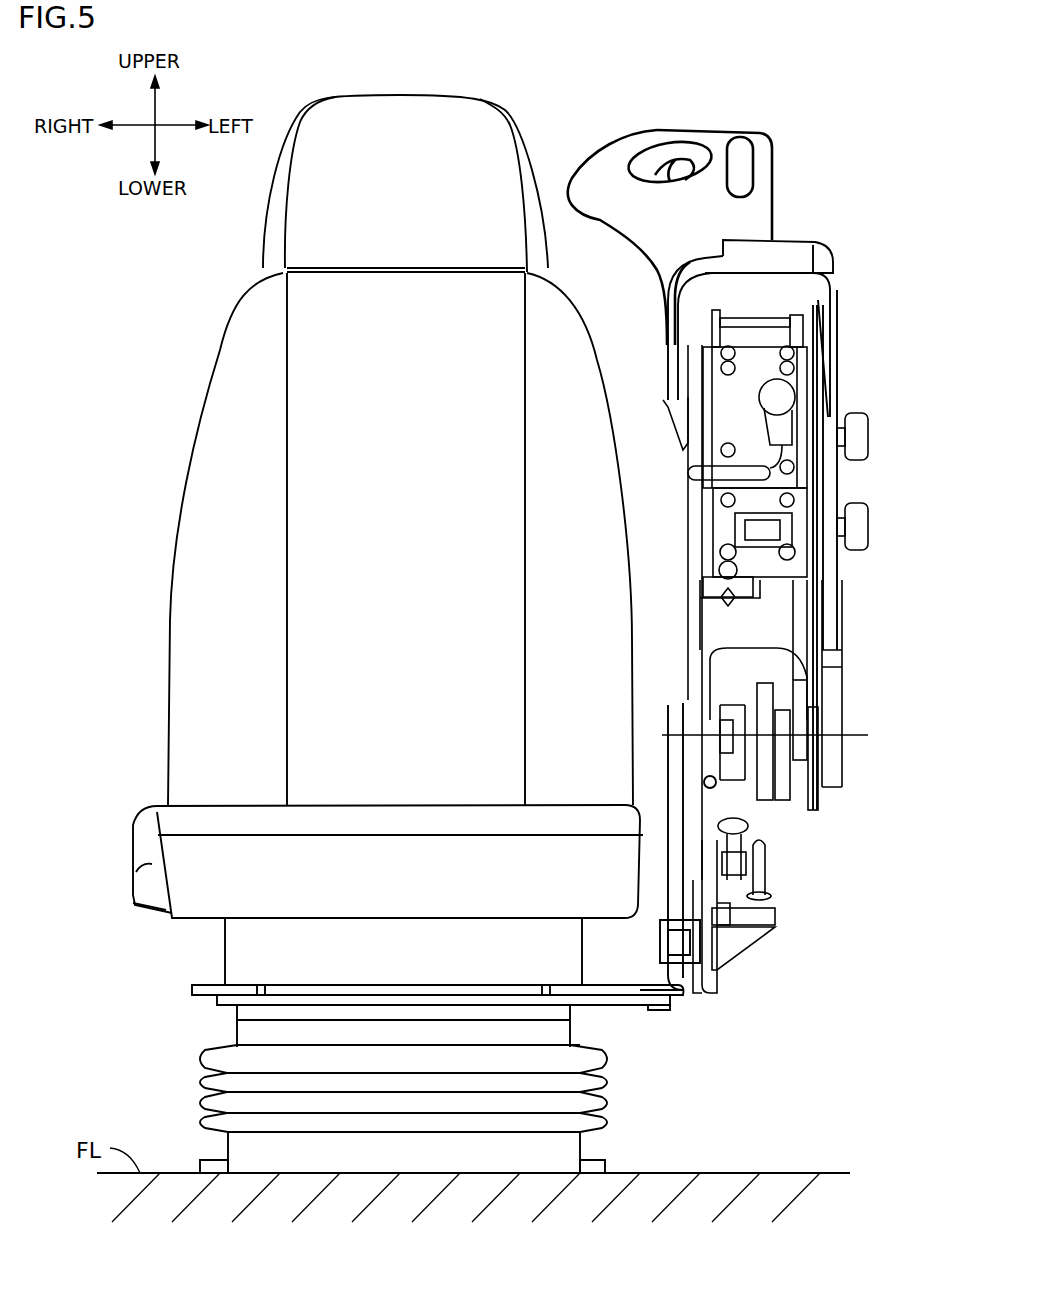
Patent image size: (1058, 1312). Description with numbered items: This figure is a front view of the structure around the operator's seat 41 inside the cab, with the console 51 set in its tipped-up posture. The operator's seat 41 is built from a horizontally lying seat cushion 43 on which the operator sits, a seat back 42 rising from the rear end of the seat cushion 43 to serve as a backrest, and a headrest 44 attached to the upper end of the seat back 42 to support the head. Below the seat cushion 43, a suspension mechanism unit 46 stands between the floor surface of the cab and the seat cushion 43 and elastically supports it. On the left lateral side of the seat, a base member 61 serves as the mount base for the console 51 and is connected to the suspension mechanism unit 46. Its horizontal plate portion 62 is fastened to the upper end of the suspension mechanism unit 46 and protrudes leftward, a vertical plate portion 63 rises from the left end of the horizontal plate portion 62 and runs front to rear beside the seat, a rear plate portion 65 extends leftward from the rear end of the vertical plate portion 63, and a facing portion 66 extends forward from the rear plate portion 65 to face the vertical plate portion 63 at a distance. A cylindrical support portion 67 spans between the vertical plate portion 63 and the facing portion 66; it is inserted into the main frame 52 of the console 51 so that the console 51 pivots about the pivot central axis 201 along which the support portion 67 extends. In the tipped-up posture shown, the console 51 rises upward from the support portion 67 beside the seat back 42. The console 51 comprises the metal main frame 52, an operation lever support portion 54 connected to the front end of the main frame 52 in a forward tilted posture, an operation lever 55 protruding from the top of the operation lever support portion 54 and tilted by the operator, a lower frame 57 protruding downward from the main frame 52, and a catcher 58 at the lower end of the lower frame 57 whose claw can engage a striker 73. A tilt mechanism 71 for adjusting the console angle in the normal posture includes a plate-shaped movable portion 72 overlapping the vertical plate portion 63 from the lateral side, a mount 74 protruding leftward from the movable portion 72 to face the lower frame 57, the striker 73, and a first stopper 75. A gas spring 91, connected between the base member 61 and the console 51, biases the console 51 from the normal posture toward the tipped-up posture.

The operator's seat 41 is at (297, 123).
The seat back 42 is at (555, 330).
The seat cushion 43 is at (182, 877).
The headrest 44 is at (388, 115).
The suspension mechanism unit 46 is at (197, 1108).
The console 51 is at (836, 264).
The main frame 52 is at (777, 623).
The operation lever support portion 54 is at (797, 256).
The operation lever 55 is at (687, 170).
The lower frame 57 is at (763, 500).
The catcher 58 is at (770, 548).
The base member 61 is at (694, 998).
The horizontal plate portion 62 is at (640, 1000).
The vertical plate portion 63 is at (698, 883).
The rear plate portion 65 is at (733, 740).
The facing portion 66 is at (813, 747).
The support portion 67 is at (813, 780).
The tilt mechanism 71 is at (718, 982).
The movable portion 72 is at (717, 957).
The striker 73 is at (768, 880).
The mount 74 is at (747, 937).
The first stopper 75 is at (752, 822).
The gas spring 91 is at (838, 688).
The pivot central axis 201 is at (857, 733).